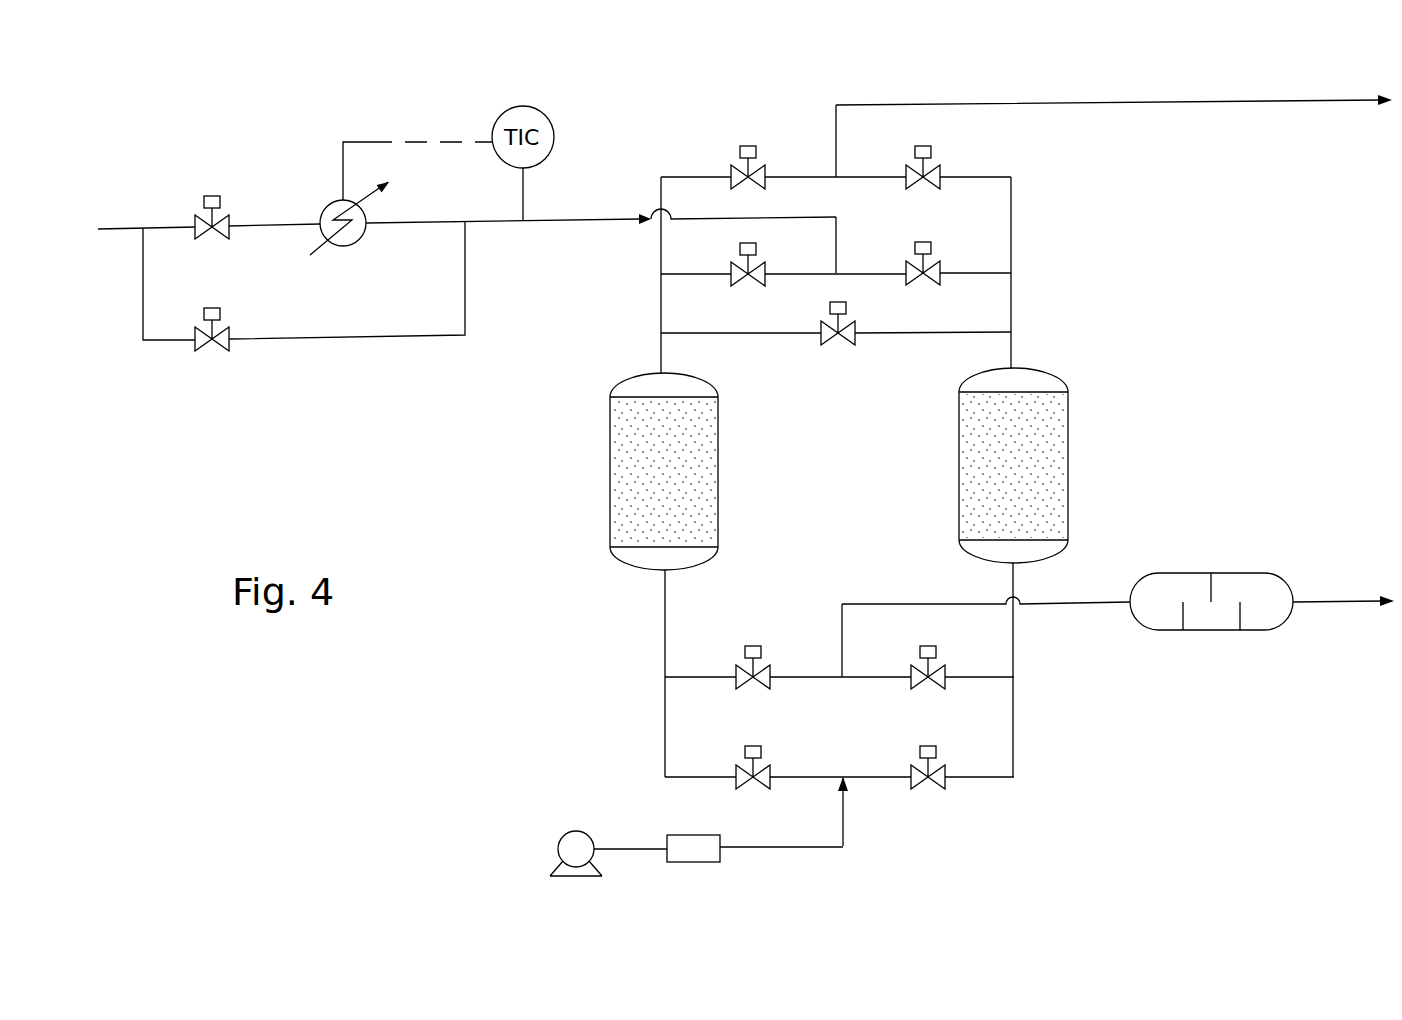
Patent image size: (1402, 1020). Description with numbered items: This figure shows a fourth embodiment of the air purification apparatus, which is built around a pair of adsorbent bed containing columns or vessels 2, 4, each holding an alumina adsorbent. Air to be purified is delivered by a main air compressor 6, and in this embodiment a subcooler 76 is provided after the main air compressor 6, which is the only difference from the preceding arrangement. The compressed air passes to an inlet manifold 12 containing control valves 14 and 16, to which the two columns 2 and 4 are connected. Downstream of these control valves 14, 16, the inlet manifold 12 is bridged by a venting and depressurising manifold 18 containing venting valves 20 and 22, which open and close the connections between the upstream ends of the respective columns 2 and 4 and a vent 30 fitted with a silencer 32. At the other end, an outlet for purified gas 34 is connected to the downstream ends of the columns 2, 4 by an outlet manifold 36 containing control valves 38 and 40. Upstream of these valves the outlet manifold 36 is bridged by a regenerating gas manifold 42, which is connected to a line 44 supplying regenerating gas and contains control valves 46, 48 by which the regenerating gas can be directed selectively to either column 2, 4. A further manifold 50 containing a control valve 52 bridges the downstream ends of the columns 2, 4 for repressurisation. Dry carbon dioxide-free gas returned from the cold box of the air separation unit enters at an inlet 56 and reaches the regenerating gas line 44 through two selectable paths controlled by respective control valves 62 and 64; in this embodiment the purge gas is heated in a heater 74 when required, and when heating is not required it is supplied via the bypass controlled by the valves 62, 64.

The adsorbent column 2 is at (718, 465).
The adsorbent column 4 is at (1068, 437).
The main air compressor 6 is at (564, 833).
The inlet manifold 12 is at (970, 776).
The control valve 14 is at (758, 745).
The control valve 16 is at (930, 789).
The venting and depressurising manifold 18 is at (970, 676).
The venting valve 20 is at (750, 645).
The venting valve 22 is at (937, 689).
The vent 30 is at (1328, 601).
The silencer 32 is at (1192, 572).
The outlet for purified gas 34 is at (1162, 104).
The outlet manifold 36 is at (1012, 243).
The control valve 38 is at (747, 145).
The control valve 40 is at (924, 145).
The regenerating gas manifold 42 is at (960, 272).
The regenerating gas line 44 is at (578, 220).
The control valve 46 is at (755, 287).
The control valve 48 is at (922, 241).
The repressurisation manifold 50 is at (938, 331).
The control valve 52 is at (845, 346).
The regenerating gas inlet 56 is at (113, 229).
The control valve 62 is at (208, 307).
The control valve 64 is at (205, 195).
The heater 74 is at (358, 246).
The subcooler 76 is at (700, 863).